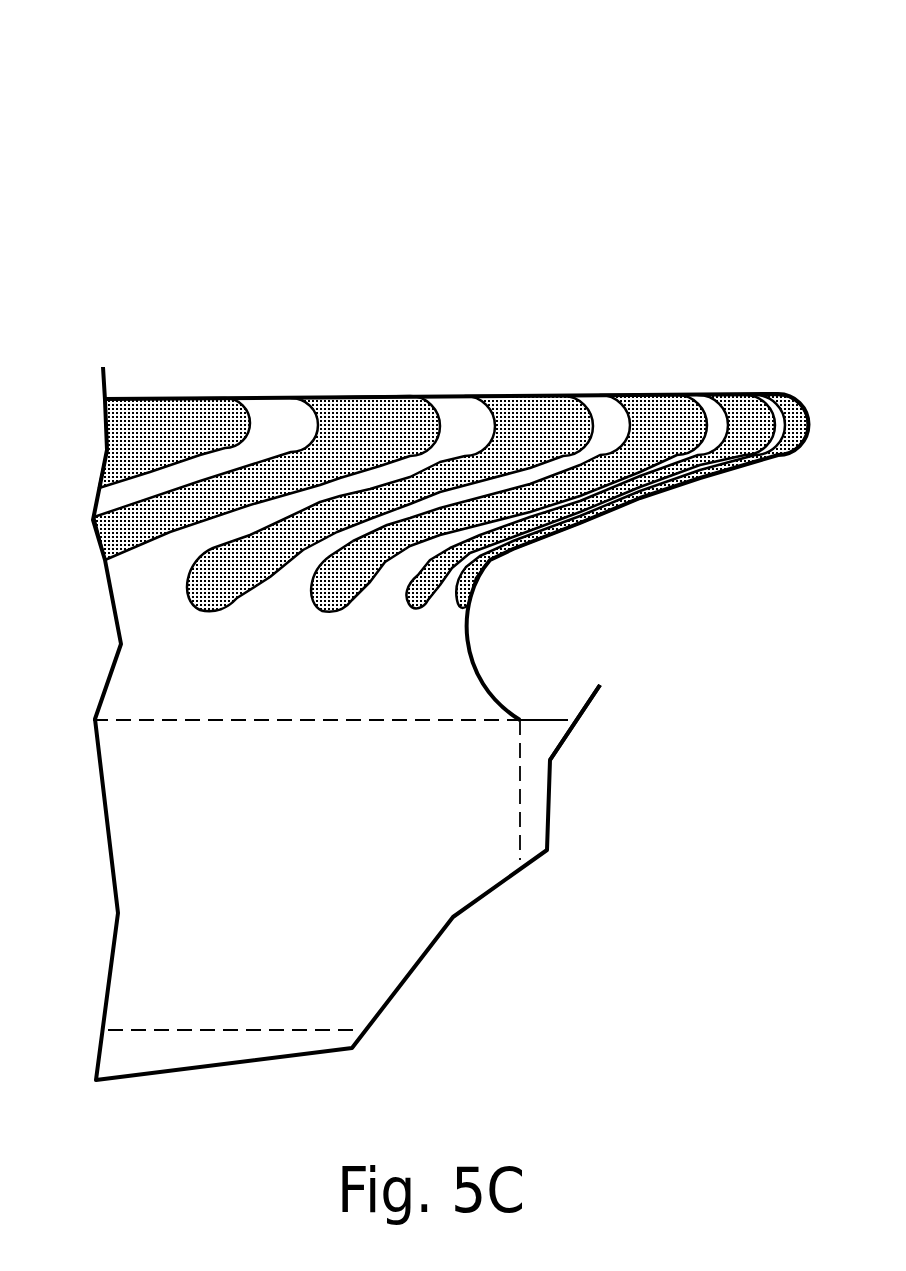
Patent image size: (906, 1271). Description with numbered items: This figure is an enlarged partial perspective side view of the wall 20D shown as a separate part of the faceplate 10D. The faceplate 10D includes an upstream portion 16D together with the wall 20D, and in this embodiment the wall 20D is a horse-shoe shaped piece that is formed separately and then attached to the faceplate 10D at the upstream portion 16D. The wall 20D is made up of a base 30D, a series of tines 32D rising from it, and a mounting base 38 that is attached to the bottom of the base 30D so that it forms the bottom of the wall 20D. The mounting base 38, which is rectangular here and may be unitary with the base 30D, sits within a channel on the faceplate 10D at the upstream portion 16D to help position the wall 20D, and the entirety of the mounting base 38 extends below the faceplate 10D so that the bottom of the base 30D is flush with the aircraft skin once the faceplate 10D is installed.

The faceplate 10D is at (411, 545).
The wall 20D is at (451, 456).
The tines 32D is at (455, 410).
The base 30D is at (191, 691).
The upstream portion 16D is at (547, 720).
The mounting base 38 is at (168, 854).